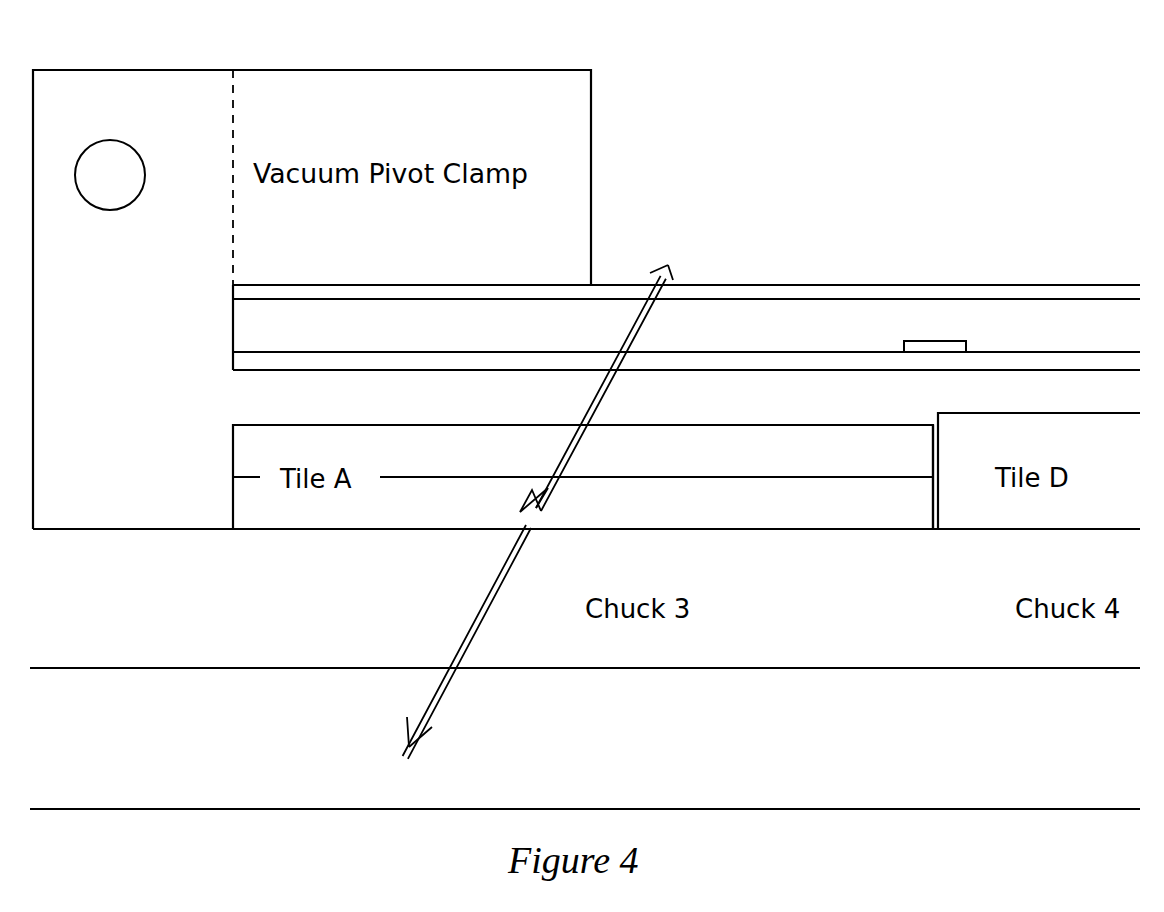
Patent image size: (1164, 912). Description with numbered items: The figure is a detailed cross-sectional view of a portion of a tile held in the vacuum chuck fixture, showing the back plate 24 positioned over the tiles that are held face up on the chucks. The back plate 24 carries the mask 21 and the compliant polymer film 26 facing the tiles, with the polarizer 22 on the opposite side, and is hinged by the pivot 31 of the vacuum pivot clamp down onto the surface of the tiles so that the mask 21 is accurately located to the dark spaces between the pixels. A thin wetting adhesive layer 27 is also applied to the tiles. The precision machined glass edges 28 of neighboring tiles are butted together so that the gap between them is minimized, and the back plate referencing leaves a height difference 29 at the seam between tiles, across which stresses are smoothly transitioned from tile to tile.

The mask 21 is at (966, 348).
The polarizer 22 is at (966, 285).
The back plate 24 is at (817, 329).
The polymer film 26 is at (520, 362).
The wetting adhesive layer 27 is at (469, 376).
The glass edges 28 is at (933, 450).
The height difference 29 is at (934, 404).
The pivot 31 is at (117, 148).